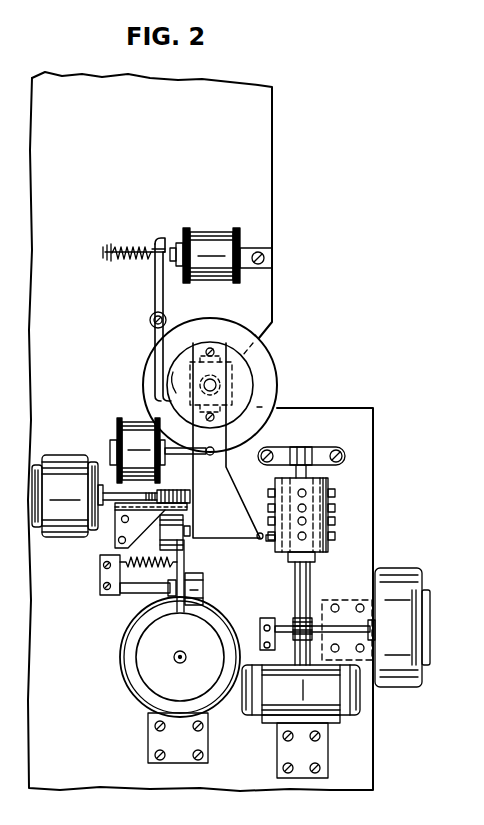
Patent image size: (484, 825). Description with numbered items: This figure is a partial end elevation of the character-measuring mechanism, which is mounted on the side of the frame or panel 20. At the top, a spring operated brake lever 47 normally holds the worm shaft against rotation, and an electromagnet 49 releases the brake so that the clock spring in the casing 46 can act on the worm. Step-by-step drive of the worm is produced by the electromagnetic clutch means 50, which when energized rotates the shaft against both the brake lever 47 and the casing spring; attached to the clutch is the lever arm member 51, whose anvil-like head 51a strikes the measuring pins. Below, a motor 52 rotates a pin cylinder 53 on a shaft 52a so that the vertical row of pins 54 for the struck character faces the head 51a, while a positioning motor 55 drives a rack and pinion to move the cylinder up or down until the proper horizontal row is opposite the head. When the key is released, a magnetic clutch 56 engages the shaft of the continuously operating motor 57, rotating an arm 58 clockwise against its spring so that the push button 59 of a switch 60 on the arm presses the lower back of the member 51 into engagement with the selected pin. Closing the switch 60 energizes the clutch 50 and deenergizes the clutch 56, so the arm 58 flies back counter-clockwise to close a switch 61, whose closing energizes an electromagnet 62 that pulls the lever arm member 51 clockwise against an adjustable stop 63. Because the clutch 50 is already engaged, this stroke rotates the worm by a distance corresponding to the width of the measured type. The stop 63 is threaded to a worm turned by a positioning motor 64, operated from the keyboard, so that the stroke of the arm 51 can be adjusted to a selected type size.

The panel frame 20 is at (373, 469).
The casing 46 is at (272, 372).
The brake lever 47 is at (155, 292).
The electromagnet 49 is at (218, 232).
The electromagnetic clutch means 50 is at (235, 345).
The lever arm member 51 is at (235, 498).
The head 51a is at (264, 533).
The motor 52 is at (248, 716).
The shaft 52a is at (297, 581).
The pin cylinder 53 is at (327, 548).
The pins 54 is at (270, 542).
The positioning motor 55 is at (405, 570).
The magnetic clutch 56 is at (143, 647).
The motor 57 is at (128, 675).
The arm 58 is at (183, 560).
The push button 59 is at (190, 533).
The switch 60 is at (160, 536).
The switch 61 is at (204, 589).
The electromagnet 62 is at (133, 418).
The adjustable stop 63 is at (192, 488).
The positioning motor 64 is at (71, 457).